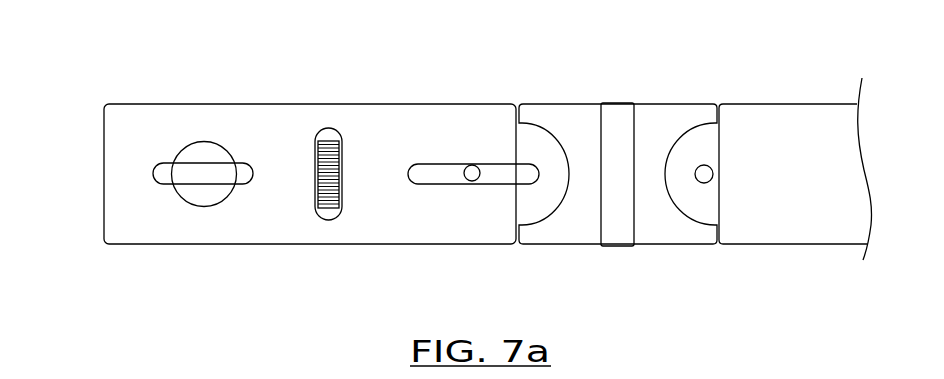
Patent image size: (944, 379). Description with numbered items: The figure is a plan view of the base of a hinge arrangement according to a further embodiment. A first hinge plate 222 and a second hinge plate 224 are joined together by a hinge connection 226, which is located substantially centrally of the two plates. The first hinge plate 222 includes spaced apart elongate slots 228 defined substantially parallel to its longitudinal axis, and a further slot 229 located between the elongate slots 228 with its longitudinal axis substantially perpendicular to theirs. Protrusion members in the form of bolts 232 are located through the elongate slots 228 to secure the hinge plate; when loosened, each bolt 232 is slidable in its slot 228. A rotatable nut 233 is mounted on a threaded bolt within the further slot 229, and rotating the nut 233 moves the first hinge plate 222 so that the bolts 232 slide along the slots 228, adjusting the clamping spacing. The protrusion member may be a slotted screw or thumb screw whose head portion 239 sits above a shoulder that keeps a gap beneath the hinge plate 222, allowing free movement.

The first hinge plate 222 is at (205, 102).
The second hinge plate 224 is at (805, 125).
The hinge connection 226 is at (626, 102).
The elongate slots 228 is at (153, 178).
The further slot 229 is at (337, 133).
The bolts 232 is at (470, 179).
The rotatable nut 233 is at (333, 205).
The head portion 239 is at (215, 155).